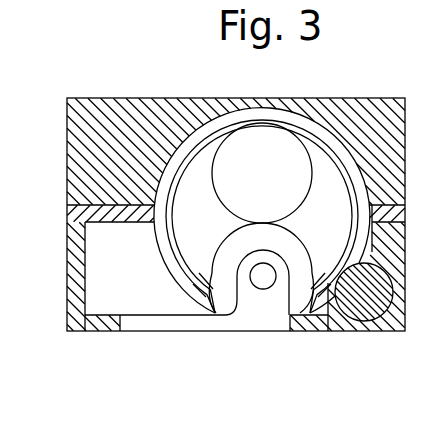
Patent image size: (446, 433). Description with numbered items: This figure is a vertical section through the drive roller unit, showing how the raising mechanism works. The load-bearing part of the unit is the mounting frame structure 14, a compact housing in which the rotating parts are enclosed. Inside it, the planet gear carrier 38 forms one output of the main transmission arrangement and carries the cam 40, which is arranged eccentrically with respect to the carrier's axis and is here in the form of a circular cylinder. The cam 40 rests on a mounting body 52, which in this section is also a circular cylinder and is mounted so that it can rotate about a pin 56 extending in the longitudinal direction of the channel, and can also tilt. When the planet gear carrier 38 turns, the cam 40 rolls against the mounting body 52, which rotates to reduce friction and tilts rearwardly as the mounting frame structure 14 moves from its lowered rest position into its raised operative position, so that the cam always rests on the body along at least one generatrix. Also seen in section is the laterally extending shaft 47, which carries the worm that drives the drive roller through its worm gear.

The mounting frame structure 14 is at (118, 105).
The planet gear carrier 38 is at (318, 185).
The cam 40 is at (236, 145).
The shaft 47 is at (370, 320).
The mounting body 52 is at (222, 272).
The pin 56 is at (265, 283).